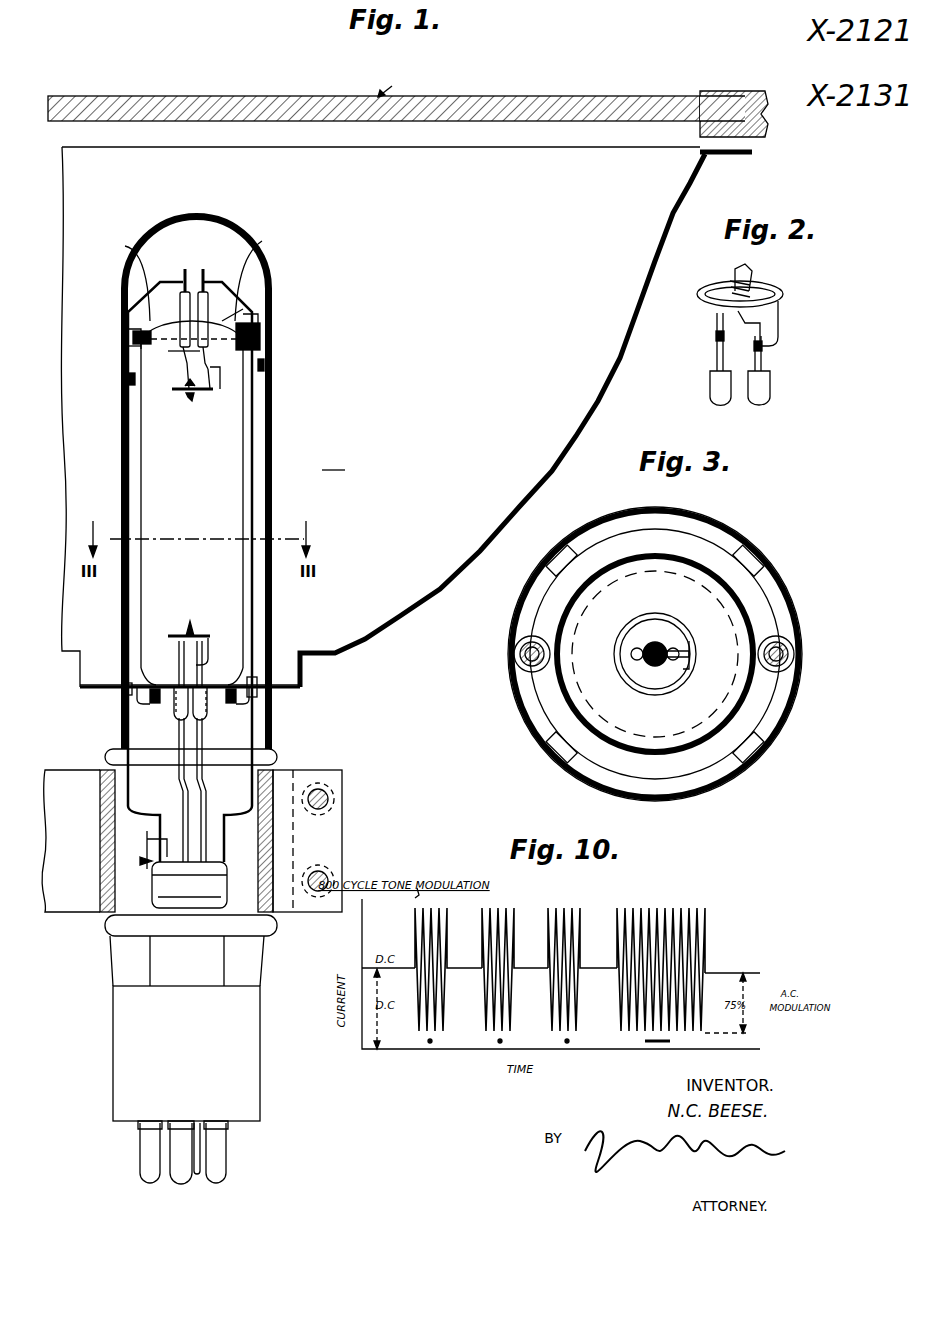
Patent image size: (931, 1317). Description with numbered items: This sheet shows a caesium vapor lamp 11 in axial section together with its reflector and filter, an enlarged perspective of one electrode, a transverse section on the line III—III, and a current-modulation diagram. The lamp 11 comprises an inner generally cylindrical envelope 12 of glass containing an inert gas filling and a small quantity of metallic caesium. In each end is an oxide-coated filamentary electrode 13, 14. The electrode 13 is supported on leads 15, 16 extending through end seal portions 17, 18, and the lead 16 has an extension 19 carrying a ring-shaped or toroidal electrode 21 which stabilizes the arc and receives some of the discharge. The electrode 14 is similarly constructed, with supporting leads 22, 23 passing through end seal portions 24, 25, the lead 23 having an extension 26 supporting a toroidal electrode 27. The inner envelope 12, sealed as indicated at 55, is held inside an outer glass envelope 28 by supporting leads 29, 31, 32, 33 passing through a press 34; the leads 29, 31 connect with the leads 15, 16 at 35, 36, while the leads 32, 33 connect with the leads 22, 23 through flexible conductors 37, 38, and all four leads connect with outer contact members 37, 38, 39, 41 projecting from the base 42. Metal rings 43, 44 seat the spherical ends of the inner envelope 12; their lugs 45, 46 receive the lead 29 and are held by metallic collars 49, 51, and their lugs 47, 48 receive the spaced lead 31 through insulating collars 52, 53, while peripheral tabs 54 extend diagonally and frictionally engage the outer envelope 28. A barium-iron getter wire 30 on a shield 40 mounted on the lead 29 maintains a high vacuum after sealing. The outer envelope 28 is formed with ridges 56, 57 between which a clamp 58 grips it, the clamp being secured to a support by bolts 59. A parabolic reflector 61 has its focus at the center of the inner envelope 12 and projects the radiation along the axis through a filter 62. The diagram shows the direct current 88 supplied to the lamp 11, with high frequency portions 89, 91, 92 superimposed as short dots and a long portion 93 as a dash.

In FIG. 1, the caesium vapor lamp 11 is at (272, 470).
In FIG. 3, the caesium vapor lamp 11 is at (517, 714).
In FIG. 1, the inner envelope 12 is at (243, 452).
In FIG. 3, the inner envelope 12 is at (738, 610).
In FIG. 1, the electrode 13 is at (193, 400).
In FIG. 1, the electrode 14 is at (191, 622).
In FIG. 2, the electrode 14 is at (752, 272).
In FIG. 3, the electrode 14 is at (656, 668).
In FIG. 1, the lead 15 is at (181, 354).
In FIG. 1, the lead 16 is at (208, 353).
In FIG. 1, the end seal portion 17 is at (176, 282).
In FIG. 1, the end seal portion 18 is at (208, 298).
In FIG. 1, the extension 19 is at (214, 376).
In FIG. 1, the toroidal electrode 21 is at (182, 394).
In FIG. 1, the supporting lead 22 is at (178, 664).
In FIG. 2, the supporting lead 22 is at (714, 356).
In FIG. 3, the supporting lead 22 is at (634, 661).
In FIG. 1, the supporting lead 23 is at (199, 668).
In FIG. 2, the supporting lead 23 is at (763, 357).
In FIG. 3, the supporting lead 23 is at (682, 658).
In FIG. 1, the end seal portion 24 is at (175, 721).
In FIG. 2, the end seal portion 24 is at (714, 390).
In FIG. 3, the end seal portion 24 is at (636, 648).
In FIG. 1, the end seal portion 25 is at (202, 718).
In FIG. 2, the end seal portion 25 is at (771, 388).
In FIG. 3, the end seal portion 25 is at (678, 672).
In FIG. 1, the extension 26 is at (210, 645).
In FIG. 2, the extension 26 is at (781, 336).
In FIG. 3, the extension 26 is at (693, 648).
In FIG. 1, the toroidal electrode 27 is at (207, 632).
In FIG. 2, the toroidal electrode 27 is at (784, 296).
In FIG. 3, the toroidal electrode 27 is at (690, 640).
In FIG. 1, the outer envelope 28 is at (272, 406).
In FIG. 3, the outer envelope 28 is at (693, 794).
In FIG. 1, the supporting lead 29 is at (128, 480).
In FIG. 3, the supporting lead 29 is at (521, 654).
In FIG. 1, the getter wire 30 is at (140, 860).
In FIG. 1, the supporting lead 31 is at (253, 505).
In FIG. 3, the supporting lead 31 is at (792, 652).
In FIG. 1, the supporting lead 32 is at (166, 872).
In FIG. 1, the supporting lead 33 is at (217, 865).
In FIG. 1, the press 34 is at (222, 898).
In FIG. 1, the connection 35 is at (126, 275).
In FIG. 1, the connection 36 is at (261, 275).
In FIG. 1, the flexible conductor 37 is at (179, 788).
In FIG. 1, the flexible conductor 38 is at (199, 781).
In FIG. 1, the outer contact member 39 is at (176, 1177).
In FIG. 1, the shield 40 is at (143, 850).
In FIG. 1, the outer contact member 41 is at (198, 1178).
In FIG. 1, the base 42 is at (260, 1047).
In FIG. 1, the metal ring 43 is at (125, 328).
In FIG. 1, the metal ring 44 is at (124, 689).
In FIG. 3, the metal ring 44 is at (631, 540).
In FIG. 1, the lug 45 is at (124, 344).
In FIG. 1, the lug 46 is at (122, 679).
In FIG. 3, the lug 46 is at (521, 645).
In FIG. 1, the lug 47 is at (264, 332).
In FIG. 1, the lug 48 is at (260, 682).
In FIG. 3, the lug 48 is at (797, 688).
In FIG. 1, the metallic collar 49 is at (124, 353).
In FIG. 1, the metallic collar 51 is at (120, 700).
In FIG. 3, the metallic collar 51 is at (517, 667).
In FIG. 1, the insulating collar 52 is at (268, 312).
In FIG. 1, the insulating collar 53 is at (260, 694).
In FIG. 3, the insulating collar 53 is at (792, 640).
In FIG. 1, the peripheral tabs 54 is at (130, 378).
In FIG. 3, the peripheral tabs 54 is at (565, 550).
In FIG. 1, the seal 55 is at (226, 316).
In FIG. 1, the ridge 56 is at (277, 757).
In FIG. 1, the ridge 57 is at (270, 931).
In FIG. 1, the clamp 58 is at (275, 834).
In FIG. 1, the bolts 59 is at (326, 794).
In FIG. 1, the parabolic reflector 61 is at (500, 564).
In FIG. 1, the filter 62 is at (556, 95).
In FIG. 10, the direct current 88 is at (730, 971).
In FIG. 10, the high frequency portion 89 is at (414, 919).
In FIG. 10, the high frequency portion 91 is at (482, 919).
In FIG. 10, the high frequency portion 92 is at (548, 919).
In FIG. 10, the high frequency portion 93 is at (617, 922).